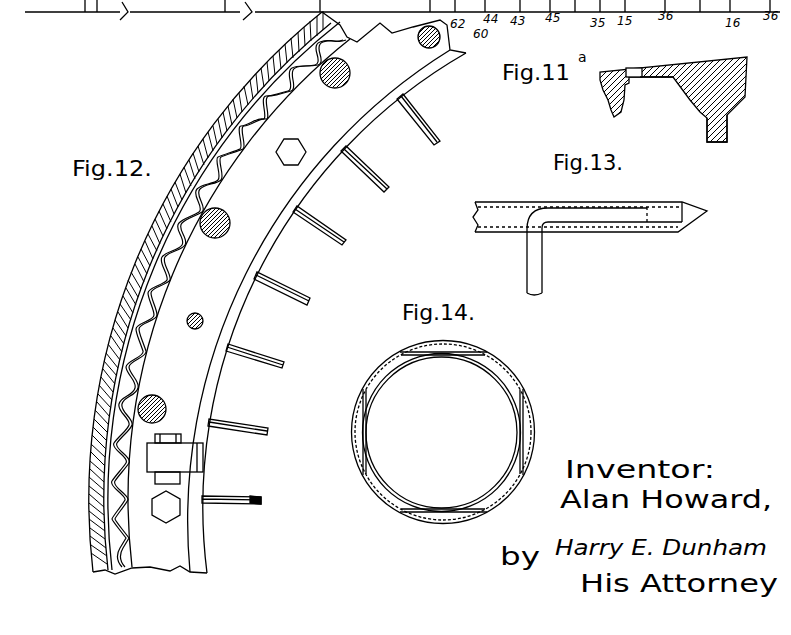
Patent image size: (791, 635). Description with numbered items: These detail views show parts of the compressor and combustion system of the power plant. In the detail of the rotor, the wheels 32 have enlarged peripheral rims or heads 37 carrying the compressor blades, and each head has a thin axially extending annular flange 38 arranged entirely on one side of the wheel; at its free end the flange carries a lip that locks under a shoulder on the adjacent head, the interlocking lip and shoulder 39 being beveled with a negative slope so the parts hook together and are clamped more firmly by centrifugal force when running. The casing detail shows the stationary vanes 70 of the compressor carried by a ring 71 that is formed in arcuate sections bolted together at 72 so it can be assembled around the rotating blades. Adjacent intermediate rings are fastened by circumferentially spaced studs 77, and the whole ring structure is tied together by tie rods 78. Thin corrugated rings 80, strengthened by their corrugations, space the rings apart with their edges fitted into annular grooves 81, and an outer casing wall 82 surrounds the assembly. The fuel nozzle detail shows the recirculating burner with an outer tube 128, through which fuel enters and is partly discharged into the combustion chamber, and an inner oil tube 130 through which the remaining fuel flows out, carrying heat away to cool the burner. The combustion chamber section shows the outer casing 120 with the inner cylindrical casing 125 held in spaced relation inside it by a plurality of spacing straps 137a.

In FIG. 12, the stationary vanes 70 is at (368, 173).
In FIG. 12, the ring 71 is at (214, 394).
In FIG. 12, the bolted connection of ring sections 72 is at (148, 450).
In FIG. 12, the studs 77 is at (293, 150).
In FIG. 12, the tie rods 78 is at (228, 218).
In FIG. 12, the corrugated rings 80 is at (260, 133).
In FIG. 12, the annular grooves 81 is at (128, 363).
In FIG. 12, the outer casing wall 82 is at (130, 280).
In FIG. 11A, the wheels 32 is at (727, 128).
In FIG. 11A, the annular rims or heads 37 is at (703, 62).
In FIG. 11A, the axially extending annular flange 38 is at (662, 78).
In FIG. 11A, the interlocking lip and shoulder 39 is at (628, 70).
In FIG. 13, the outer tube 128 is at (663, 202).
In FIG. 13, the inner oil tube 130 is at (630, 218).
In FIG. 14, the outer casing 120 is at (350, 431).
In FIG. 14, the inner cylindrical casing 125 is at (402, 368).
In FIG. 14, the spacing straps 137a is at (418, 513).